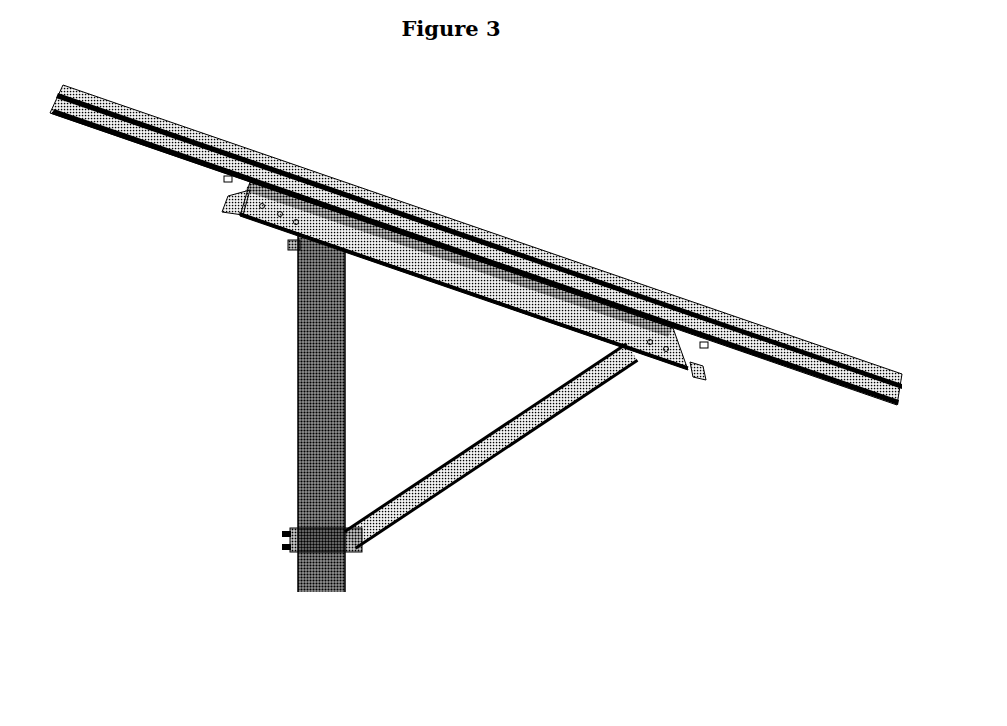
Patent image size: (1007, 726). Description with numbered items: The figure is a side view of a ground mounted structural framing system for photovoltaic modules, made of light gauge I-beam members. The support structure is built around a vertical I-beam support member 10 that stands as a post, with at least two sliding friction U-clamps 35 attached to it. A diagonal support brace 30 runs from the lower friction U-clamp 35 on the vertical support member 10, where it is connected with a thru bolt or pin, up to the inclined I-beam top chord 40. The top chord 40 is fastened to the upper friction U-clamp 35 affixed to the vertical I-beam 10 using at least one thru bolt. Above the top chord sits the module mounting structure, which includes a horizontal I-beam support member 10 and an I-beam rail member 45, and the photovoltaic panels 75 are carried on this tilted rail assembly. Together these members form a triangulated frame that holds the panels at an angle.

The I-beam support member 10 is at (298, 393).
The diagonal support brace 30 is at (488, 458).
The sliding clamp 35 is at (292, 244).
The I-beam top chord 40 is at (508, 288).
The I-beam rail member 45 is at (768, 348).
The photovoltaic panels 75 is at (476, 245).